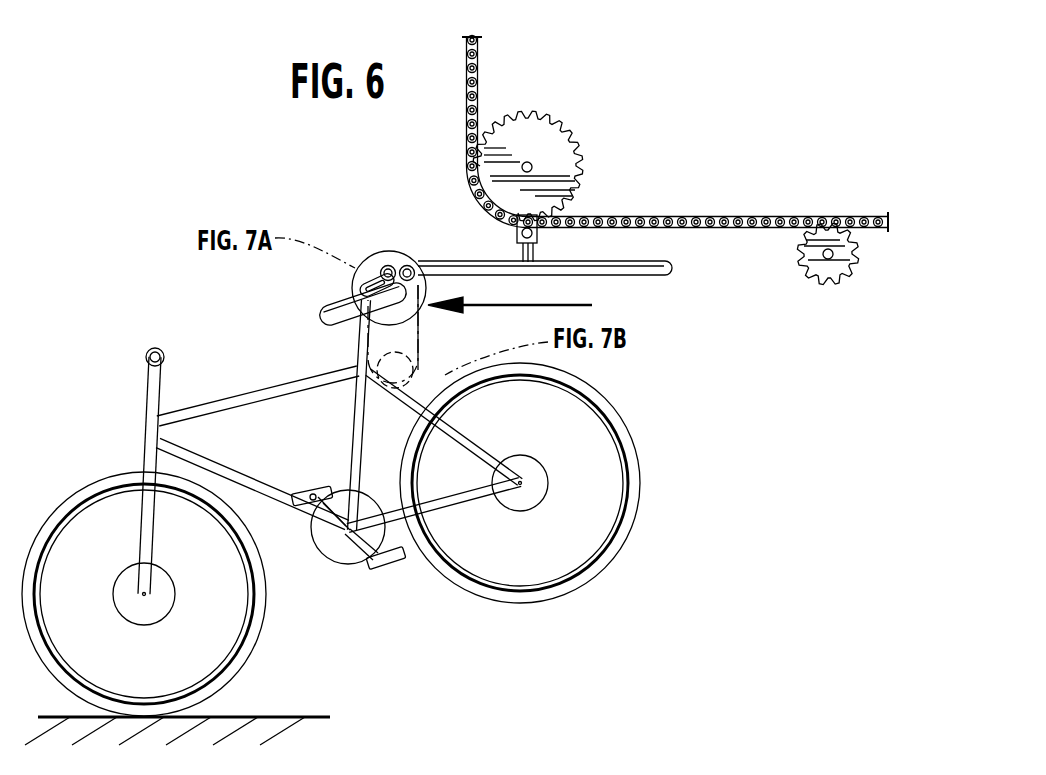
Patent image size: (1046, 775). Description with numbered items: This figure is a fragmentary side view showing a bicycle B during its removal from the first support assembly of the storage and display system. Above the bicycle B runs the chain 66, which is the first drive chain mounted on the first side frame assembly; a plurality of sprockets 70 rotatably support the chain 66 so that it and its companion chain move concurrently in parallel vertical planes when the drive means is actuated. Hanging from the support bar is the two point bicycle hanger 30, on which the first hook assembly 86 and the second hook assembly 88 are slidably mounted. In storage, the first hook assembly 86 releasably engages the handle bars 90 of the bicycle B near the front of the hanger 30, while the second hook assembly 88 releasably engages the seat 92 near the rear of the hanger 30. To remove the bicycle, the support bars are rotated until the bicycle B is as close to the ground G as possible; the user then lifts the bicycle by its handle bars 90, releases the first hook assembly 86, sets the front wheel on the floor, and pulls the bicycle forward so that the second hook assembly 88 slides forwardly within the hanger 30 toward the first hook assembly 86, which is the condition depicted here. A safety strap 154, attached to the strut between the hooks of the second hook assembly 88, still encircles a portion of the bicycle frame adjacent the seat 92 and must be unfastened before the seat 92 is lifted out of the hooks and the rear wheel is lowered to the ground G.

The chain 66 is at (855, 222).
The sprockets 70 is at (467, 151).
The second hook assembly 88 is at (417, 258).
The bicycle hanger 30 is at (663, 278).
The first hook assembly 86 is at (376, 258).
The seat 92 is at (338, 316).
The safety strap 154 is at (422, 327).
The handle bars 90 is at (150, 353).
The bicycle B is at (632, 518).
The ground G is at (298, 716).